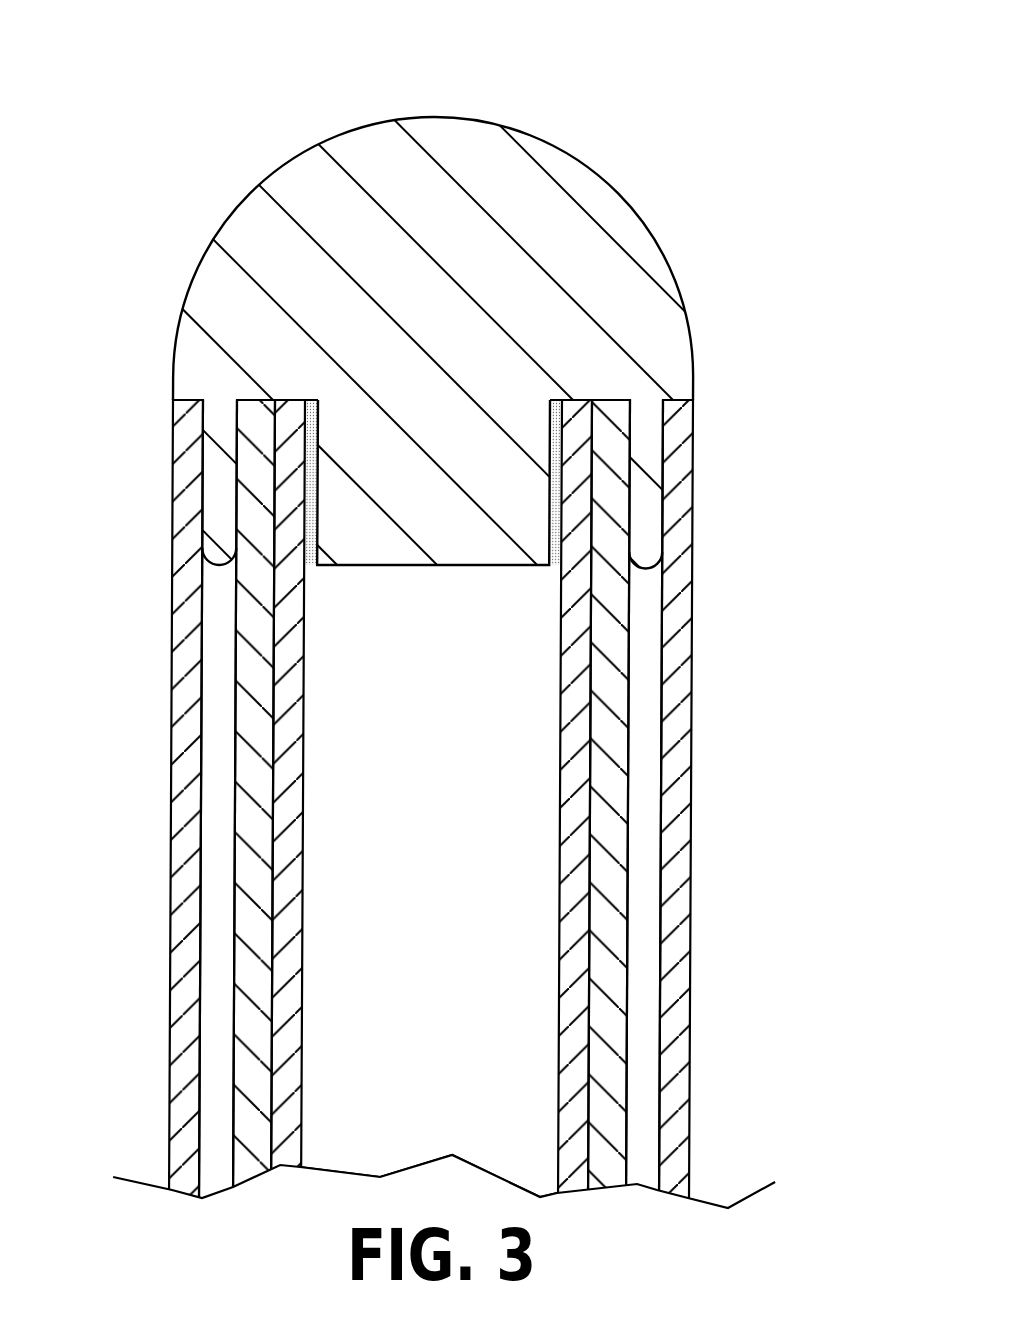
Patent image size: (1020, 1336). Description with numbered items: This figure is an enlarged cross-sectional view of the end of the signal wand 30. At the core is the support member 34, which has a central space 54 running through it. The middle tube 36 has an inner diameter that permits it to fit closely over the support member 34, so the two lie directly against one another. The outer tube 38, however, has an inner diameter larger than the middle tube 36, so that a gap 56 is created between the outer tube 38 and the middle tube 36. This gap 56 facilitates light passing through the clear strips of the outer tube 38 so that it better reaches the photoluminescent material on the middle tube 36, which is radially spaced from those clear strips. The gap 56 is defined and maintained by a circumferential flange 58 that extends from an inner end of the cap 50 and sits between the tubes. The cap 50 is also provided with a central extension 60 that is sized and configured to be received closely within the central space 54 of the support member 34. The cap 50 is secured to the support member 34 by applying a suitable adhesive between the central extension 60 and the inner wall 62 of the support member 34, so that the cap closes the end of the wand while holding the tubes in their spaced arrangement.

The signal wand 30 is at (487, 605).
The support member 34 is at (571, 706).
The middle tube 36 is at (623, 628).
The outer tube 38 is at (675, 450).
The cap 50 is at (442, 138).
The central space 54 is at (357, 908).
The gap 56 is at (638, 778).
The circumferential flange 58 is at (640, 553).
The central extension 60 is at (405, 470).
The inner wall 62 is at (306, 733).